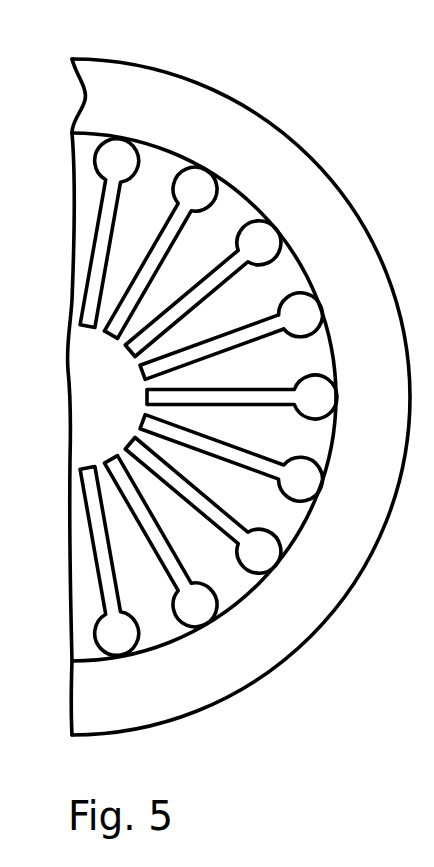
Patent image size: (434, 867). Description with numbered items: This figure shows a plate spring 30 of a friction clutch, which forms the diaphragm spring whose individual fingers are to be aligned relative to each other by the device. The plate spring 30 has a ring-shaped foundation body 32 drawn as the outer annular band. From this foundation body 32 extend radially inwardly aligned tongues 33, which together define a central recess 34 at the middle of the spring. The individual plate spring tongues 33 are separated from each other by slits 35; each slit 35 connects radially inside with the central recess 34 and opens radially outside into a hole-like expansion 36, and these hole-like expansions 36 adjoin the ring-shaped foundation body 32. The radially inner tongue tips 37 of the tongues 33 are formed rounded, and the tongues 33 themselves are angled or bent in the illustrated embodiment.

The plate spring 30 is at (190, 97).
The ring-shaped foundation body 32 is at (253, 133).
The tongues 33 is at (126, 232).
The central recess 34 is at (82, 405).
The slits 35 is at (196, 345).
The hole-like expansions 36 is at (300, 312).
The tongue tips 37 is at (125, 344).